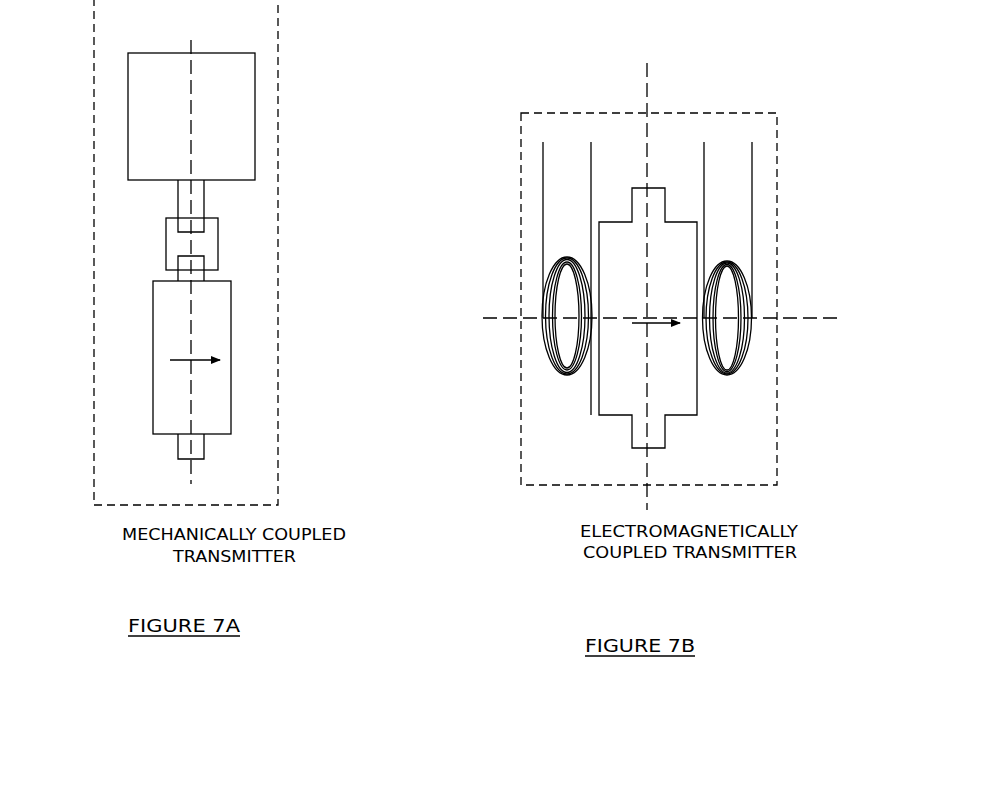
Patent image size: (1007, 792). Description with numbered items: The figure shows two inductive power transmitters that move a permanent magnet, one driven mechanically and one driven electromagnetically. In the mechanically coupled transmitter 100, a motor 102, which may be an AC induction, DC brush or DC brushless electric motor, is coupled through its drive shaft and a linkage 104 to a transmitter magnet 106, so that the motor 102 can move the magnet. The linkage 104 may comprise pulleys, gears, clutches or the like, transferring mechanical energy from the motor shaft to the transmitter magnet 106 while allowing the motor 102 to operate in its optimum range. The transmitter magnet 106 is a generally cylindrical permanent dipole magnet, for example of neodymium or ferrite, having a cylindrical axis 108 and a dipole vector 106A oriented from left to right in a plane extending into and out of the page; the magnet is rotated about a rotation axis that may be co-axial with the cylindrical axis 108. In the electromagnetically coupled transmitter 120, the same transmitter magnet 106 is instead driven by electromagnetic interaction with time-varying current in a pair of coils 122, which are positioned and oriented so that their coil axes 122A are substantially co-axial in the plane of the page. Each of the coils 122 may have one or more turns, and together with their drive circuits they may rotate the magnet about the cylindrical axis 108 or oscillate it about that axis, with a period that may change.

In FIG. 7A, the transmitter 100 is at (302, 160).
In FIG. 7A, the motor 102 is at (133, 111).
In FIG. 7A, the linkage 104 is at (171, 244).
In FIG. 7A, the transmitter magnet 106 is at (167, 340).
In FIG. 7B, the transmitter magnet 106 is at (631, 236).
In FIG. 7A, the dipole vector 106A is at (192, 360).
In FIG. 7B, the dipole vector 106A is at (647, 326).
In FIG. 7A, the cylindrical axis 108 is at (101, 309).
In FIG. 7B, the cylindrical axis 108 is at (566, 305).
In FIG. 7B, the transmitter 120 is at (482, 448).
In FIG. 7B, the coils 122 is at (550, 282).
In FIG. 7B, the coil axes 122A is at (500, 322).